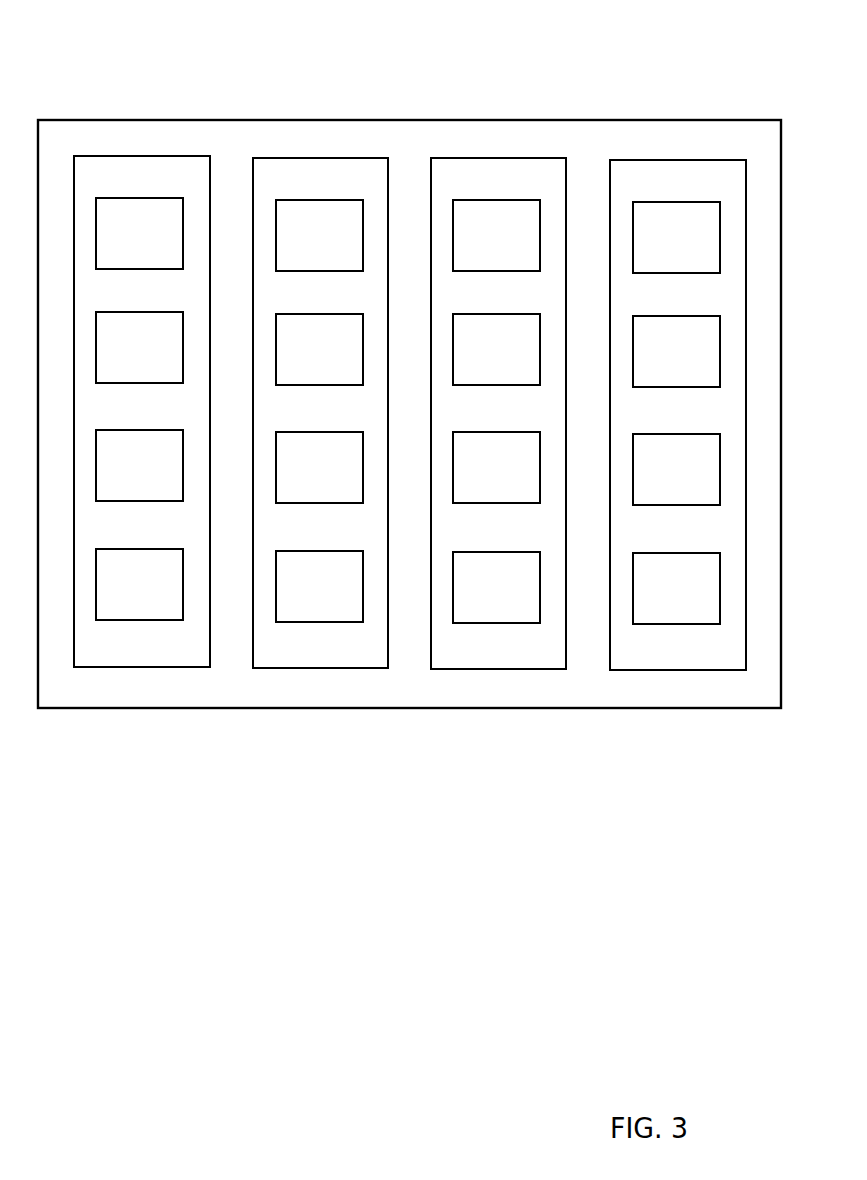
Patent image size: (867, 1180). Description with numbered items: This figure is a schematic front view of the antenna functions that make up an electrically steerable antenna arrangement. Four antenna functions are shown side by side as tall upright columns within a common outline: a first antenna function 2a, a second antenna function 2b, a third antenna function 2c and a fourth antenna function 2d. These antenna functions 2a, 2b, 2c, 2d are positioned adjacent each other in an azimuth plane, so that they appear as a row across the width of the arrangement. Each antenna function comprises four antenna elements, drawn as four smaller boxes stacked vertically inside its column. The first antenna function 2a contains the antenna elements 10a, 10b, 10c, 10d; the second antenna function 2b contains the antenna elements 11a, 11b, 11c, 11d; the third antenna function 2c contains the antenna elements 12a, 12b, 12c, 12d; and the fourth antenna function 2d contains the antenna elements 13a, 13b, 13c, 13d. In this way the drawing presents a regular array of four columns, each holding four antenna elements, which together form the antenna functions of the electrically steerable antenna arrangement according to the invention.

The first antenna function 2a is at (143, 118).
The second antenna function 2b is at (317, 127).
The third antenna function 2c is at (497, 127).
The fourth antenna function 2d is at (674, 125).
The antenna element 10a is at (162, 246).
The antenna element 10b is at (162, 358).
The antenna element 10c is at (162, 472).
The antenna element 10d is at (162, 598).
The antenna element 11a is at (336, 252).
The antenna element 11b is at (336, 366).
The antenna element 11c is at (336, 478).
The antenna element 11d is at (336, 602).
The antenna element 12a is at (516, 252).
The antenna element 12b is at (516, 368).
The antenna element 12c is at (516, 480).
The antenna element 12d is at (516, 608).
The antenna element 13a is at (690, 256).
The antenna element 13b is at (690, 372).
The antenna element 13c is at (690, 484).
The antenna element 13d is at (690, 612).